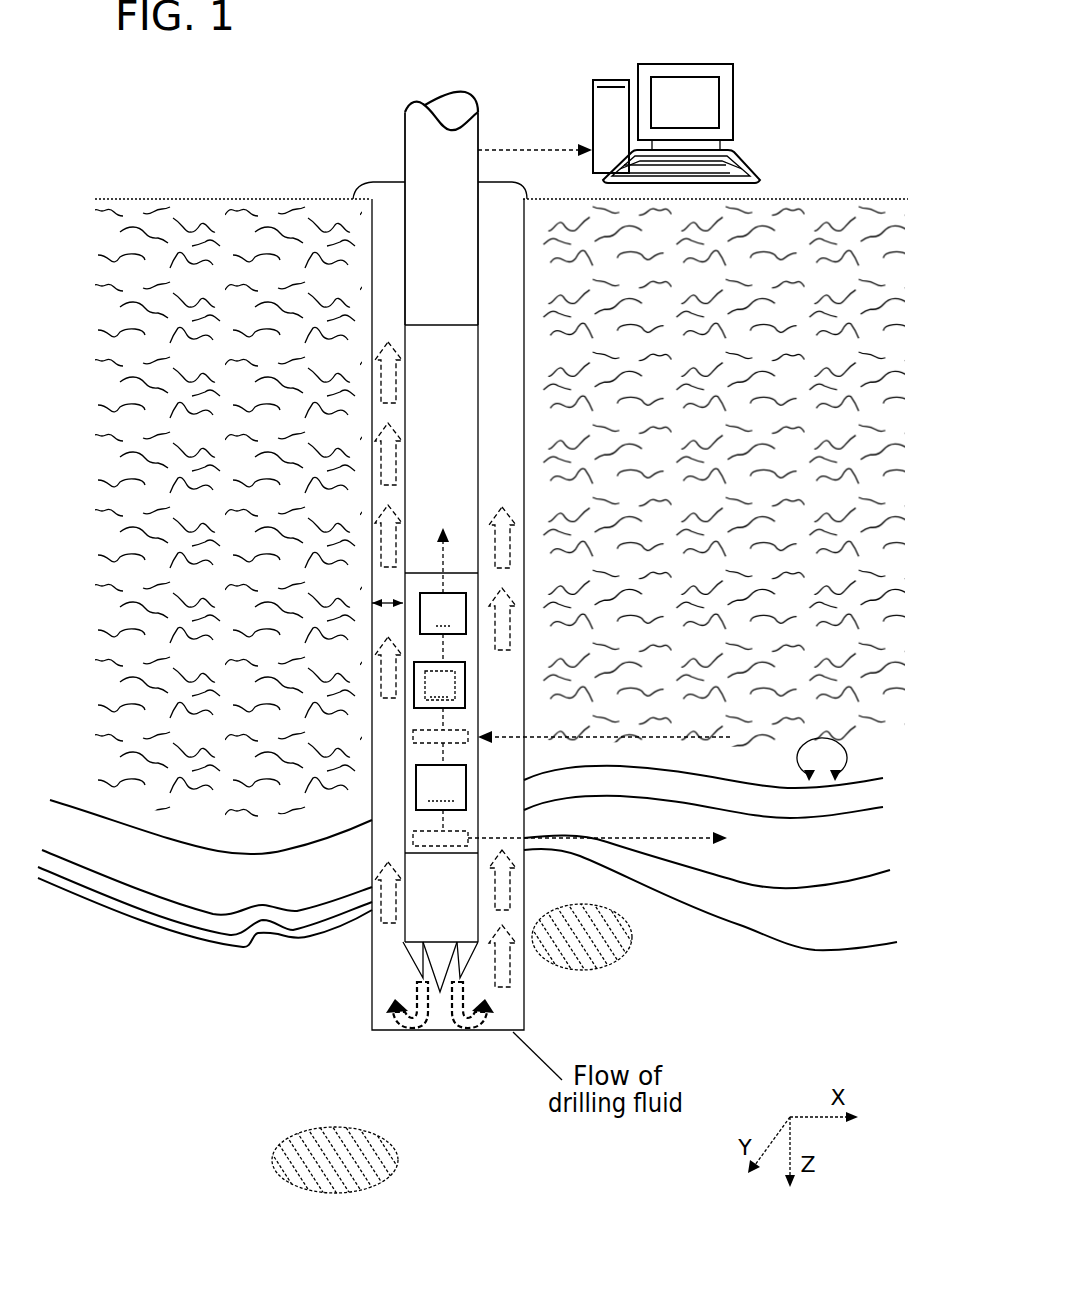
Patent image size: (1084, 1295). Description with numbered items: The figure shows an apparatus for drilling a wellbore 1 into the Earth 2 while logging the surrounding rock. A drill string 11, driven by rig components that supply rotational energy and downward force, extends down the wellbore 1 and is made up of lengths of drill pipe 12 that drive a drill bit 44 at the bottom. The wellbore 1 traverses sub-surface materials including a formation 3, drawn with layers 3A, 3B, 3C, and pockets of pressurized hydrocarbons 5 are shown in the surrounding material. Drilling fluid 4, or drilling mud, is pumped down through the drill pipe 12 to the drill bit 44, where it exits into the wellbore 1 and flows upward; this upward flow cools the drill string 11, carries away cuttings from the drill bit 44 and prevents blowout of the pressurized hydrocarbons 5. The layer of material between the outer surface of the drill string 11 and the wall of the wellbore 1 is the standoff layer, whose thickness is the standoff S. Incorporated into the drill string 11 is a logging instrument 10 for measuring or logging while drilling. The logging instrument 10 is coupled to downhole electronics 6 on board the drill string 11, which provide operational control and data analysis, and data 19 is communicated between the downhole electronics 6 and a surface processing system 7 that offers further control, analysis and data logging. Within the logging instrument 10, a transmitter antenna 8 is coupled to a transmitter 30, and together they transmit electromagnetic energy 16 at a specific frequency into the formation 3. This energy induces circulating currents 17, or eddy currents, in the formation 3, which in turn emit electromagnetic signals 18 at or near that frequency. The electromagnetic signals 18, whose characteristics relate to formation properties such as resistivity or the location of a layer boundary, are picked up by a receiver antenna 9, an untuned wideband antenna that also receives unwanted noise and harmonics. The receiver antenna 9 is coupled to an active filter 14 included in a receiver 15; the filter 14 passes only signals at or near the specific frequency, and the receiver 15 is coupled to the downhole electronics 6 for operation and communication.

The wellbore 1 is at (371, 1011).
The Earth 2 is at (168, 222).
The formation 3 is at (832, 922).
The layer 3A is at (877, 797).
The layer 3B is at (877, 840).
The layer 3C is at (877, 900).
The drilling fluid 4 is at (392, 207).
The pressurized hydrocarbons 5 is at (600, 965).
The downhole electronics 6 is at (443, 595).
The surface processing system 7 is at (600, 82).
The transmitter antenna 8 is at (421, 839).
The receiver antenna 9 is at (457, 737).
The logging instrument 10 is at (393, 765).
The drill string 11 is at (402, 140).
The drill pipe 12 is at (460, 148).
The active filter 14 is at (439, 696).
The receiver 15 is at (465, 673).
The electromagnetic energy 16 is at (655, 838).
The circulating currents 17 is at (850, 760).
The electromagnetic signals 18 is at (677, 737).
The data 19 is at (503, 148).
The transmitter 30 is at (441, 798).
The drill bit 44 is at (440, 958).
The standoff S is at (372, 603).